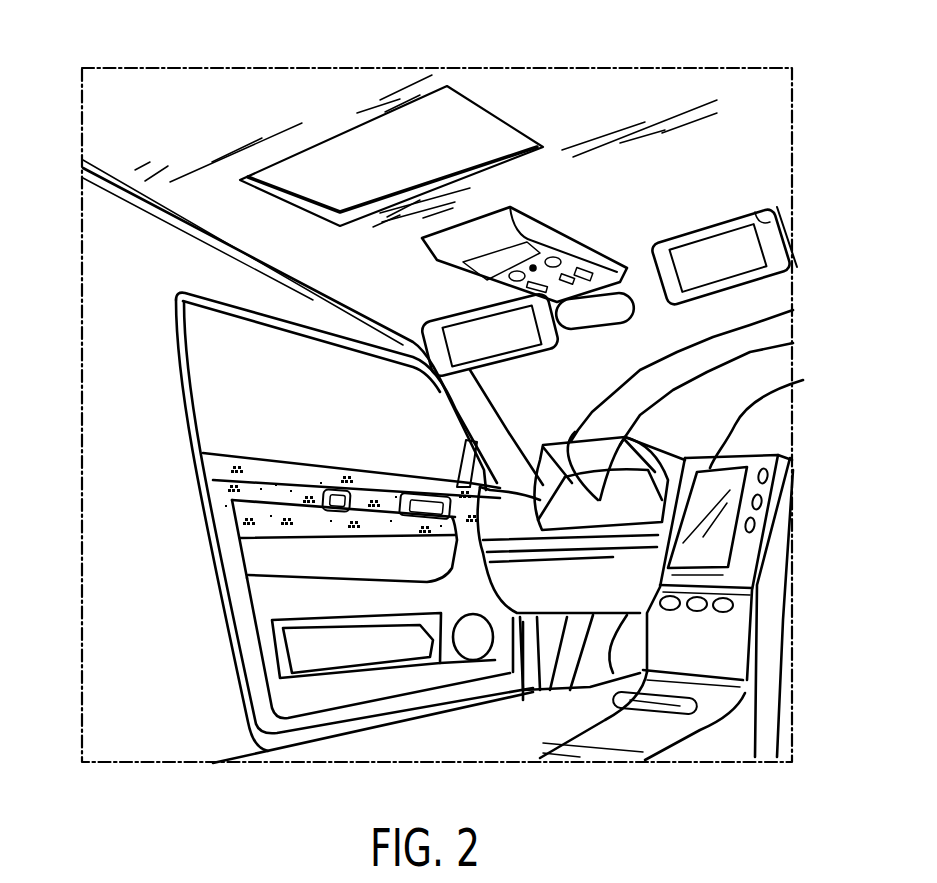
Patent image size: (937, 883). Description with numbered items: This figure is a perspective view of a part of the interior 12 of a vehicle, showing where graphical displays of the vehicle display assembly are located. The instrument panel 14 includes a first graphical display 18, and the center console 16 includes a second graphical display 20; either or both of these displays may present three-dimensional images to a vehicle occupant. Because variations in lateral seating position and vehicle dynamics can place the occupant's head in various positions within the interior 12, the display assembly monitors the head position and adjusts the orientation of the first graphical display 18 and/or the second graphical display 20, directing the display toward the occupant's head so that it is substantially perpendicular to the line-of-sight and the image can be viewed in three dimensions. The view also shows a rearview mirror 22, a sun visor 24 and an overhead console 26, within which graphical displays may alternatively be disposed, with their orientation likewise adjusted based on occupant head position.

The interior 12 is at (189, 96).
The instrument panel 14 is at (793, 310).
The center console 16 is at (795, 380).
The first graphical display 18 is at (793, 343).
The second graphical display 20 is at (733, 483).
The rearview mirror 22 is at (653, 268).
The sun visor 24 is at (497, 358).
The overhead console 26 is at (552, 237).